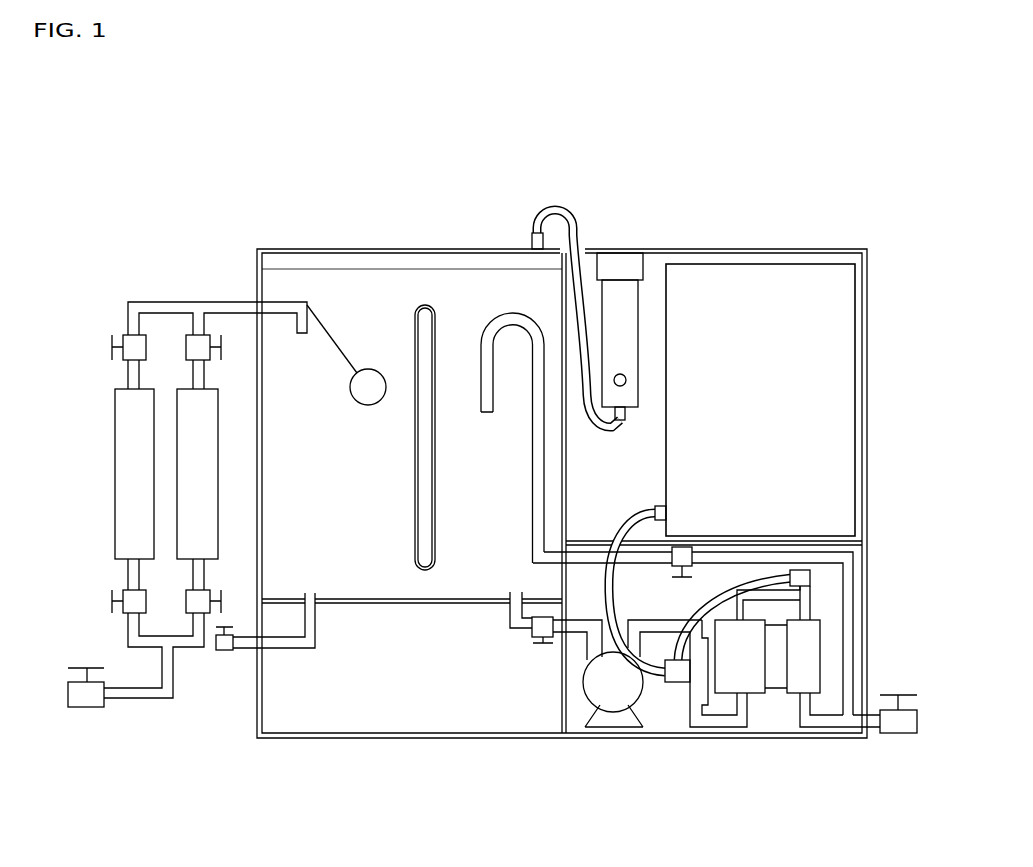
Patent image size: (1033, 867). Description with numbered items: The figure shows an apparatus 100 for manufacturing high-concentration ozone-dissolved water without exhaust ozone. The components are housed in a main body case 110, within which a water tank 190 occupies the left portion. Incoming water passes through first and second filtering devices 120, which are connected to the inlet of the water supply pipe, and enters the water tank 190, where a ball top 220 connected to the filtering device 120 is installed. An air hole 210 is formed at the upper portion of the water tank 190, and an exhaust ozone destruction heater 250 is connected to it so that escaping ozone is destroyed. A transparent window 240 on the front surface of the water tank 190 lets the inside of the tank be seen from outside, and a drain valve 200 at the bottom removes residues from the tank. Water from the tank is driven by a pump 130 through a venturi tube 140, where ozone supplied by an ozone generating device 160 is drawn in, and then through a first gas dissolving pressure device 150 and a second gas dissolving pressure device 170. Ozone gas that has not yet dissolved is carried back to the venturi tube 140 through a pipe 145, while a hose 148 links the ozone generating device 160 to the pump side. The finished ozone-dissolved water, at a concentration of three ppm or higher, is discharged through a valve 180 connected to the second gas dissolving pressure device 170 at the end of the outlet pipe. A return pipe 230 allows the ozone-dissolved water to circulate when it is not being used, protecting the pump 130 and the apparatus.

The apparatus 100 is at (184, 208).
The main body case 110 is at (305, 249).
The first and second filtering devices 120 is at (193, 462).
The pump 130 is at (610, 690).
The venturi tube 140 is at (700, 685).
The pipe 145 is at (770, 553).
The supply hose 148 is at (667, 480).
The first gas dissolving pressure device 150 is at (745, 680).
The ozone generating device 160 is at (817, 412).
The second gas dissolving pressure device 170 is at (808, 672).
The valve 180 is at (900, 735).
The water tank 190 is at (393, 315).
The drain valve 200 is at (224, 653).
The air hole 210 is at (532, 240).
The ball top 220 is at (370, 395).
The return pipe 230 is at (848, 590).
The transparent window 240 is at (430, 353).
The exhaust ozone destruction heater 250 is at (630, 313).